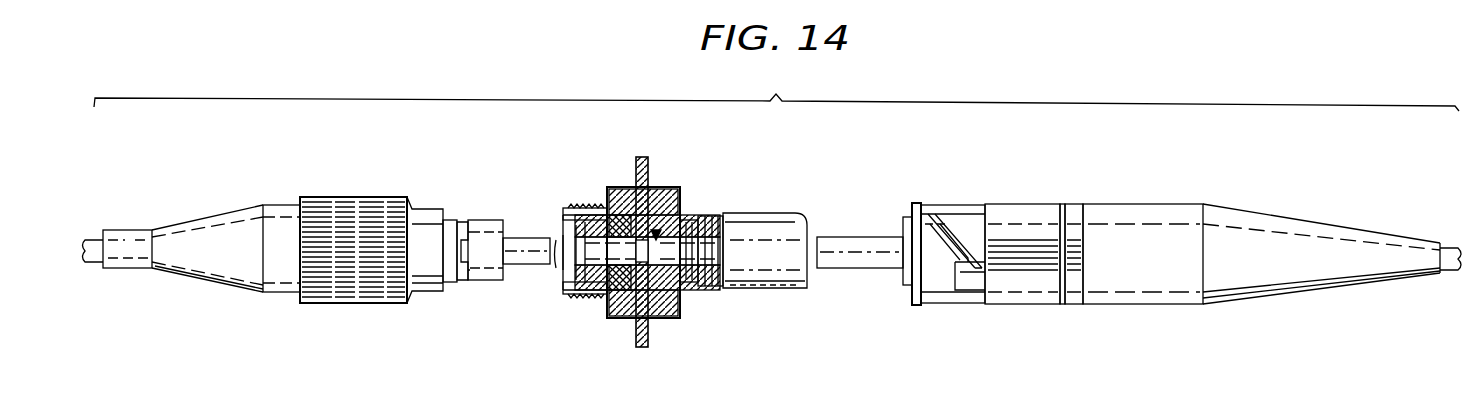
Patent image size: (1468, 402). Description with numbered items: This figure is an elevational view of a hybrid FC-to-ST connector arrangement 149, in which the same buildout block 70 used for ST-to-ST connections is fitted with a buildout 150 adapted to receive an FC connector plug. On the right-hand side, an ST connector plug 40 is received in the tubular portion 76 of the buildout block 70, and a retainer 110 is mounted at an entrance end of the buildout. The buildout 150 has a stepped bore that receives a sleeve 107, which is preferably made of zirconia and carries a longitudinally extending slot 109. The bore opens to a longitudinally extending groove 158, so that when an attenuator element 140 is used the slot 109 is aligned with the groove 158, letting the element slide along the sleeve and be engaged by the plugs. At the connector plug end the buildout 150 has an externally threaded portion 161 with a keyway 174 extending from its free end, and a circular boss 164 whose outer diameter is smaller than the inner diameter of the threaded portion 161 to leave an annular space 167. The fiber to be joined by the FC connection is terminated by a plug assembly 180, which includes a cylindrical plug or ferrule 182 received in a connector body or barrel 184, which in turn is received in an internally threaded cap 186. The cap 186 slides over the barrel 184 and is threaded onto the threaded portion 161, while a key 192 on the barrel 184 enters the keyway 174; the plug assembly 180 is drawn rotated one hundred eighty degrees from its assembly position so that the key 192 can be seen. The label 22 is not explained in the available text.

The FC-to-ST connector arrangement 149 is at (793, 88).
The plug assembly 180 is at (445, 146).
The cap 186 is at (405, 196).
The connector body or barrel 184 is at (479, 283).
The key 192 is at (461, 222).
The cylindrical plug or ferrule 182 is at (520, 220).
The keyway 174 is at (558, 283).
The buildout 150 is at (597, 208).
The circular boss 164 is at (578, 297).
The externally threaded portion 161 is at (575, 209).
The annular space 167 is at (593, 292).
The longitudinally extending groove 158 is at (650, 186).
The attenuator element 140 is at (690, 214).
The longitudinally extending slot 109 is at (702, 214).
The sleeve 107 is at (690, 265).
The retainer 110 is at (713, 290).
The buildout block 70 is at (778, 208).
The tubular portion 76 is at (792, 291).
The ST connector plug 40 is at (864, 237).
The receptacle connector 22 is at (1037, 149).